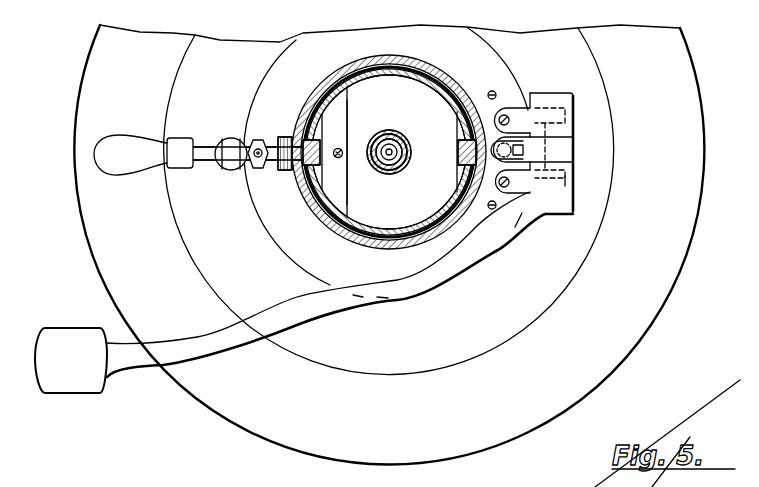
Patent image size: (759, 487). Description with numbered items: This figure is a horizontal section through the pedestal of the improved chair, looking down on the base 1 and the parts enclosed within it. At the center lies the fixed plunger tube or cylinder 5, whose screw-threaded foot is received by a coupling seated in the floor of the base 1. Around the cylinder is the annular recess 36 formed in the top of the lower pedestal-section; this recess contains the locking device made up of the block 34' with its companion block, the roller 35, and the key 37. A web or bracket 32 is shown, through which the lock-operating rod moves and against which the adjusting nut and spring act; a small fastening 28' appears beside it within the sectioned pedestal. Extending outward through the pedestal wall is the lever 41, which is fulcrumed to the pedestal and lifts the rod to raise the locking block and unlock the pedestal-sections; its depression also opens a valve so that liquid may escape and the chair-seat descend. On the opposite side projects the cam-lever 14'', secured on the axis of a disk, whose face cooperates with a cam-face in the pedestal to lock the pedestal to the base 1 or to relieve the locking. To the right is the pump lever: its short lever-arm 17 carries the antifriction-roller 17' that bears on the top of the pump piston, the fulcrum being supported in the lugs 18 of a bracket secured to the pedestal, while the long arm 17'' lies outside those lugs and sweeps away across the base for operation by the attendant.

The base 1 is at (604, 326).
The fixed plunger tube or cylinder 5 is at (398, 143).
The cam-lever 14'' is at (130, 155).
The lever-arm 17 is at (574, 150).
The antifriction-roller 17' is at (584, 150).
The long arm of the lever 17'' is at (304, 292).
The lugs 18 is at (563, 113).
The bolt 28' is at (357, 130).
The web or bracket 32 is at (340, 183).
The block 34' is at (256, 178).
The roller 35 is at (294, 177).
The annular recess 36 is at (504, 149).
The key 37 is at (463, 163).
The lever 41 is at (188, 150).